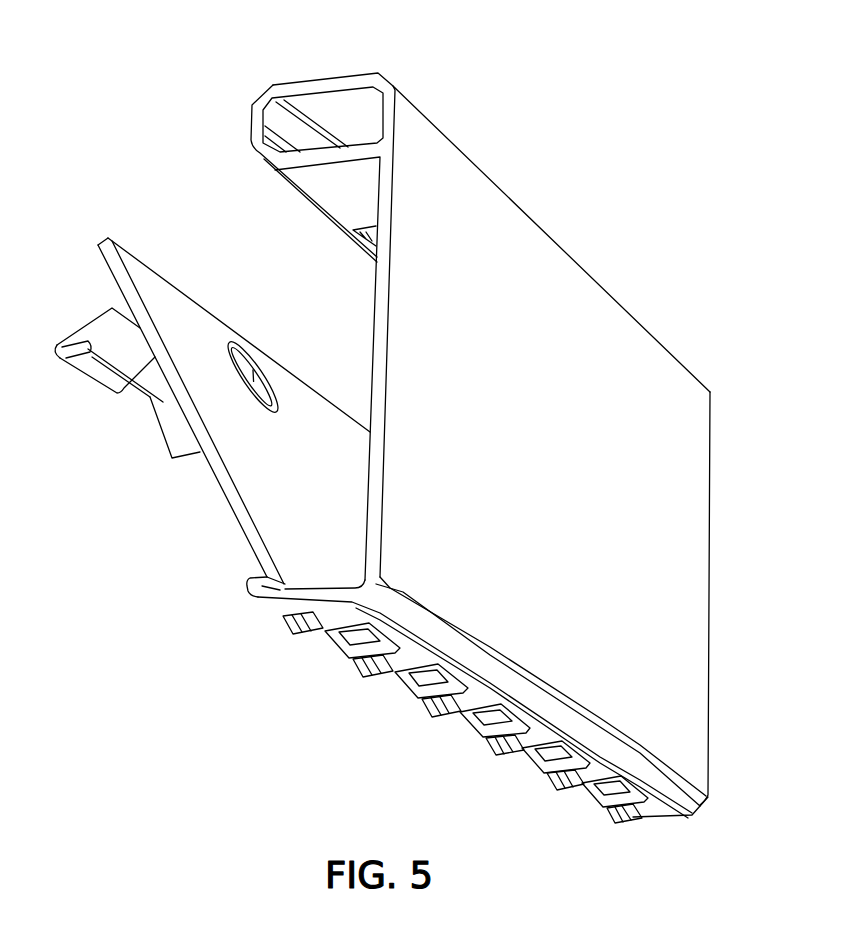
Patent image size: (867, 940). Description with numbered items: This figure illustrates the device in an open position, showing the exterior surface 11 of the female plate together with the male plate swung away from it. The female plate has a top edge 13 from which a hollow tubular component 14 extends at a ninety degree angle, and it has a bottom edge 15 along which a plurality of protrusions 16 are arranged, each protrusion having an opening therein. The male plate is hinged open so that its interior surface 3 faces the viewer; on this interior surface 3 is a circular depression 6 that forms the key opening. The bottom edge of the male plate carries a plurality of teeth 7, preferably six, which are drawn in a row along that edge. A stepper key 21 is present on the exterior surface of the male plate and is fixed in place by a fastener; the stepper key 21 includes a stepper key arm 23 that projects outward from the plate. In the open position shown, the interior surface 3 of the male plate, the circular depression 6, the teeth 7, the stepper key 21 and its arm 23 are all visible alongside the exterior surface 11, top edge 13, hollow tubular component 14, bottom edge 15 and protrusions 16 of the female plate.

The interior surface 3 is at (238, 530).
The circular depression 6 is at (240, 343).
The teeth 7 is at (312, 635).
The exterior surface 11 is at (712, 578).
The female plate top edge 13 is at (555, 242).
The hollow tubular component 14 is at (350, 73).
The female plate bottom edge 15 is at (708, 800).
The female plate protrusions 16 is at (250, 594).
The stepper key 21 is at (178, 458).
The stepper key arm 23 is at (75, 372).